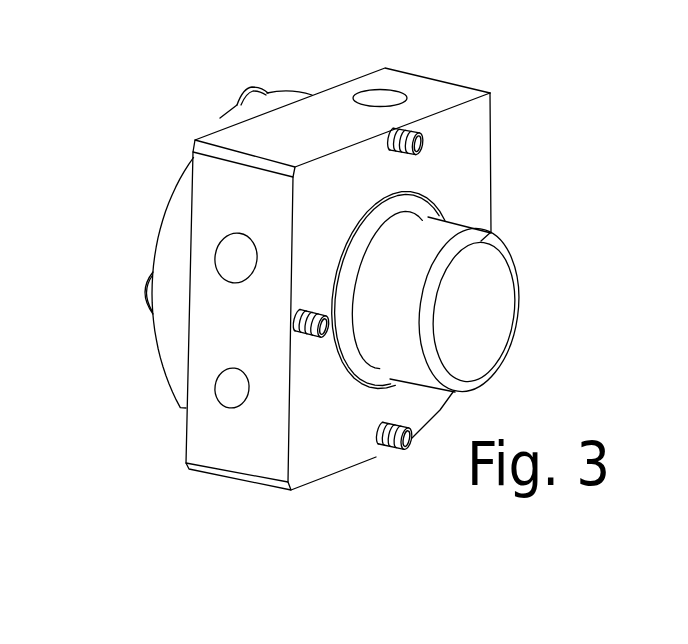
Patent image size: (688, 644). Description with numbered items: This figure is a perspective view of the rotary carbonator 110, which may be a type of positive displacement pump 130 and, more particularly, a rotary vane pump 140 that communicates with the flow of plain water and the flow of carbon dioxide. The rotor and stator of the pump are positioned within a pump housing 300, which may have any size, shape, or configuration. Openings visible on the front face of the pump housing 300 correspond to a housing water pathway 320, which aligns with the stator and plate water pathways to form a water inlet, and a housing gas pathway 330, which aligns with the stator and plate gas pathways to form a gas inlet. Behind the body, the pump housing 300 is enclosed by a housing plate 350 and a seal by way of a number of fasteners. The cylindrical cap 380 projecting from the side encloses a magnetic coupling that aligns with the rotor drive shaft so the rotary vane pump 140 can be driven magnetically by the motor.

The rotary carbonator 110 is at (116, 70).
The positive displacement pump 130 is at (360, 66).
The rotary vane pump 140 is at (357, 289).
The pump housing 300 is at (490, 171).
The housing water pathway 320 is at (228, 368).
The housing gas pathway 330 is at (228, 237).
The housing plate 350 is at (157, 238).
The cap 380 is at (511, 251).